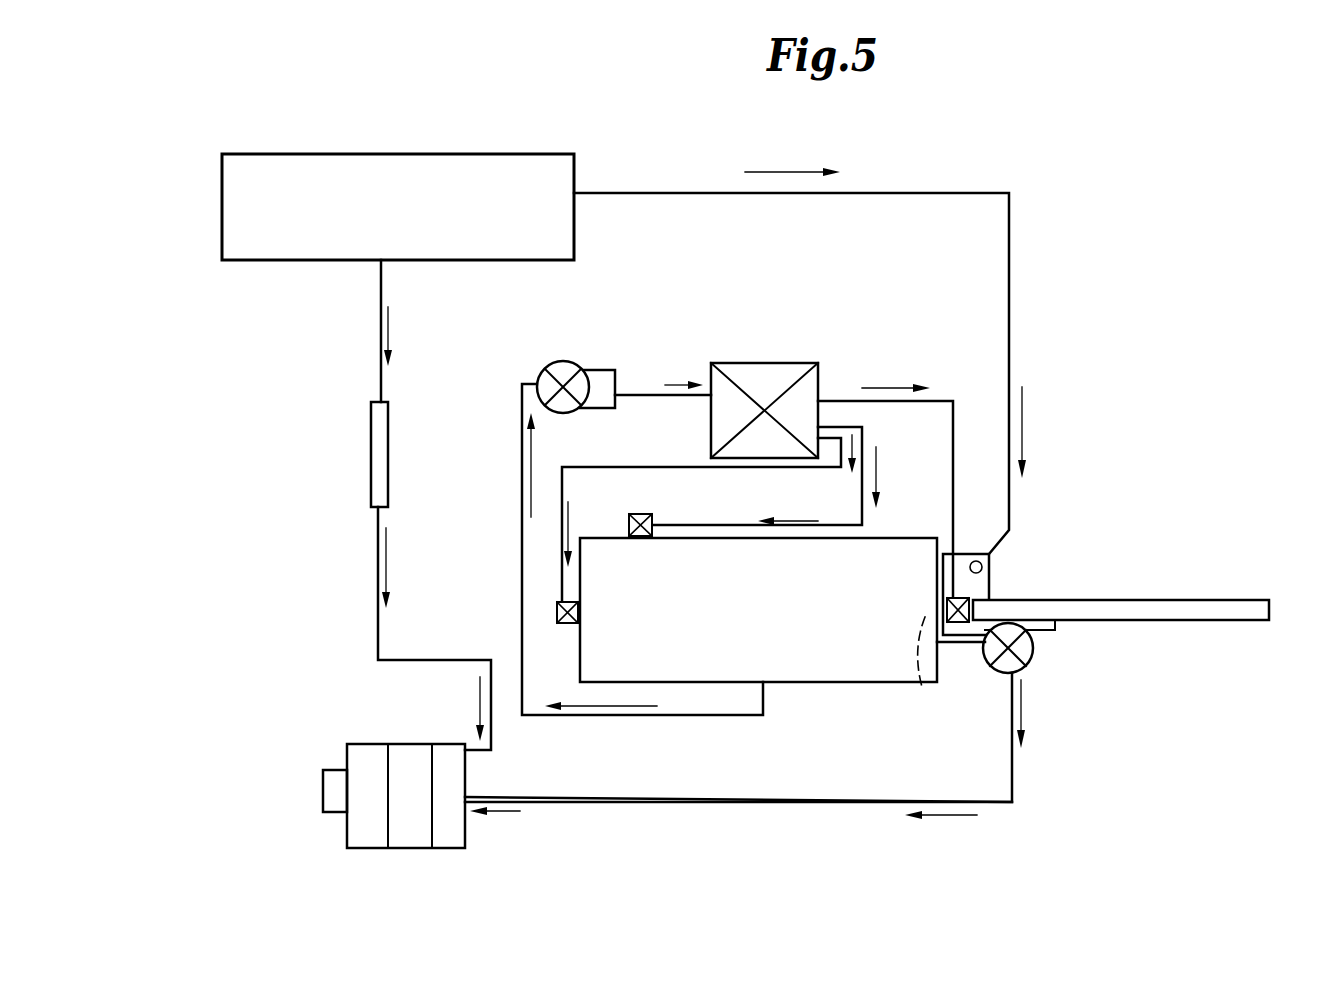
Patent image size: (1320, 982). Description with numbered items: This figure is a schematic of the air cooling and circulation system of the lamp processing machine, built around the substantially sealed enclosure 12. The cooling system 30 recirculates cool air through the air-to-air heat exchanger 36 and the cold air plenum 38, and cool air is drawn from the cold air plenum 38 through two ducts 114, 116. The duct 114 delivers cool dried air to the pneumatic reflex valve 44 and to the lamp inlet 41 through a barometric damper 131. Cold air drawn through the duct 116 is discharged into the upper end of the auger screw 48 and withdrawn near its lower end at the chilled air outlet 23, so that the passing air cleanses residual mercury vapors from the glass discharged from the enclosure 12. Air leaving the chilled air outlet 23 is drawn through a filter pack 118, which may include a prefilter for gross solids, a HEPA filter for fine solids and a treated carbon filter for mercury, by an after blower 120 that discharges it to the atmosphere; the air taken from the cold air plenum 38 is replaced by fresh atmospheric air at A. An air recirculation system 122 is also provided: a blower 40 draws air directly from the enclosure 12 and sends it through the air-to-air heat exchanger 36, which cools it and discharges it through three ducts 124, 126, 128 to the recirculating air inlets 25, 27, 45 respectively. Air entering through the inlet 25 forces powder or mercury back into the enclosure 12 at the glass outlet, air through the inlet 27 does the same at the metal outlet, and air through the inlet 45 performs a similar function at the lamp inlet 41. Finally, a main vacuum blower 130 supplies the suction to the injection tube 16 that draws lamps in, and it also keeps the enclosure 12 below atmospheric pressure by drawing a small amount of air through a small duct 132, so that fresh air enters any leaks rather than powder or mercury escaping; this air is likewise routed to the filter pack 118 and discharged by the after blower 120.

The fresh atmospheric air inlet A is at (282, 141).
The cold air plenum 38 is at (553, 185).
The duct 116 is at (380, 338).
The cooling system 30 is at (330, 363).
The auger screw 48 is at (377, 442).
The chilled air outlet 23 is at (377, 512).
The air recirculation system 122 is at (500, 470).
The blower 40 is at (557, 372).
The air-to-air heat exchanger 36 is at (813, 380).
The duct 128 is at (955, 417).
The duct 124 is at (858, 418).
The duct 126 is at (562, 528).
The recirculating air inlet 25 is at (632, 515).
The recirculating air inlet 27 is at (572, 627).
The enclosure 12 is at (800, 667).
The lamp inlet 41 is at (922, 685).
The duct 114 is at (1011, 313).
The pneumatic reflex valve 44 is at (990, 595).
The barometric damper 131 is at (981, 564).
The recirculating air inlet 45 is at (965, 598).
The injection tube 16 is at (1180, 612).
The main vacuum blower 130 is at (1027, 650).
The small duct 132 is at (972, 648).
The filter pack 118 is at (458, 835).
The after blower 120 is at (333, 793).